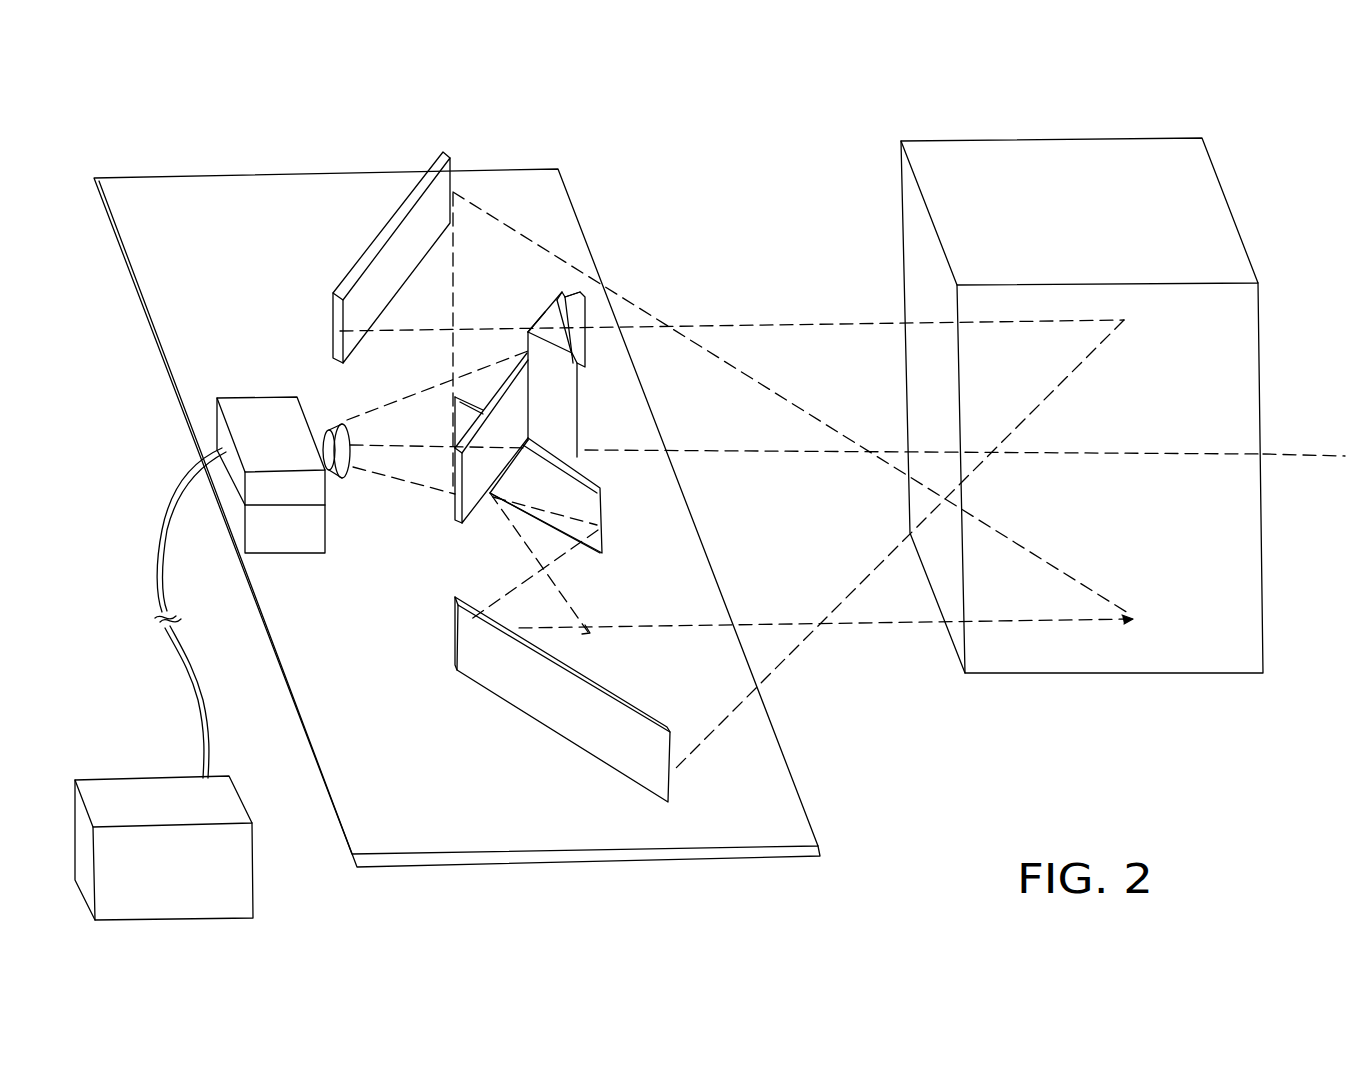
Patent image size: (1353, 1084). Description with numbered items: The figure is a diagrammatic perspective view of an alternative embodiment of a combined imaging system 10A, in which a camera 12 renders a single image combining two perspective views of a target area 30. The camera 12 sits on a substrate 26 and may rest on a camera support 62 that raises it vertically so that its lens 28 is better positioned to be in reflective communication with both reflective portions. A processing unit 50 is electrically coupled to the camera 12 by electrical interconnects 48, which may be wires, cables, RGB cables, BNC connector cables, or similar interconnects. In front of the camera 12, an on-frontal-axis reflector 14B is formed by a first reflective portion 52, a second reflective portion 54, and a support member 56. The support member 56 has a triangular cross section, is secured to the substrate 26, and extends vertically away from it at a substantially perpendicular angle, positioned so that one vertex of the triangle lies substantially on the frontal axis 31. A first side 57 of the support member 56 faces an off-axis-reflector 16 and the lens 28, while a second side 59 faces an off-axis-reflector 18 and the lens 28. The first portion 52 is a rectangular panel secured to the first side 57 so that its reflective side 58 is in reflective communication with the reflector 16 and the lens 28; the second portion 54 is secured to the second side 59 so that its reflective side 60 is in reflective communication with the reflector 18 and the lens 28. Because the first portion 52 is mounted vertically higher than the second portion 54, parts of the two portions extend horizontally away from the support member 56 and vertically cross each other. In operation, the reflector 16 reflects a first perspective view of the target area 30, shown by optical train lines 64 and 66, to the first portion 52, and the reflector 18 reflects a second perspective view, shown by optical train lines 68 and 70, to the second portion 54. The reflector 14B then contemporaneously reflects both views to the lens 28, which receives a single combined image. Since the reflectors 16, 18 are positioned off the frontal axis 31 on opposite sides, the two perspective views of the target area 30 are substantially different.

The combined imaging system 10A is at (228, 140).
The camera 12 is at (258, 405).
The on-frontal-axis reflector 14B is at (598, 430).
The off-axis-reflector 16 is at (388, 233).
The off-axis-reflector 18 is at (475, 677).
The substrate 26 is at (455, 838).
The lens 28 is at (358, 455).
The target area 30 is at (998, 136).
The frontal axis 31 is at (1278, 462).
The electrical interconnects 48 is at (147, 536).
The processing unit 50 is at (168, 886).
The first reflective portion 52 is at (587, 317).
The second reflective portion 54 is at (603, 505).
The support member 56 is at (555, 307).
The first side 57 is at (532, 303).
The reflective side 58 is at (569, 286).
The second side 59 is at (568, 392).
The reflective side 60 is at (586, 556).
The camera support 62 is at (282, 546).
The optical train line 64 is at (810, 322).
The optical train line 66 is at (803, 407).
The optical train line 68 is at (862, 568).
The optical train line 70 is at (858, 627).